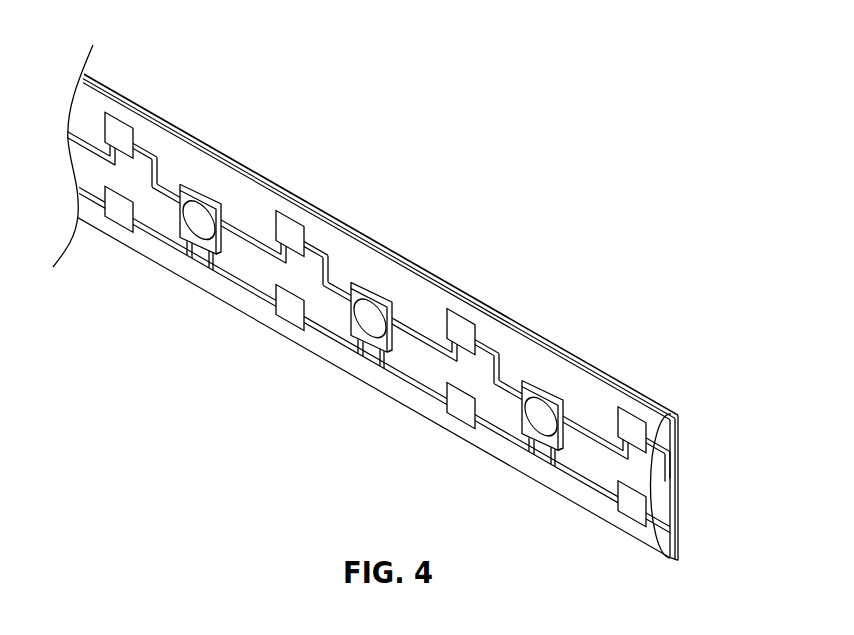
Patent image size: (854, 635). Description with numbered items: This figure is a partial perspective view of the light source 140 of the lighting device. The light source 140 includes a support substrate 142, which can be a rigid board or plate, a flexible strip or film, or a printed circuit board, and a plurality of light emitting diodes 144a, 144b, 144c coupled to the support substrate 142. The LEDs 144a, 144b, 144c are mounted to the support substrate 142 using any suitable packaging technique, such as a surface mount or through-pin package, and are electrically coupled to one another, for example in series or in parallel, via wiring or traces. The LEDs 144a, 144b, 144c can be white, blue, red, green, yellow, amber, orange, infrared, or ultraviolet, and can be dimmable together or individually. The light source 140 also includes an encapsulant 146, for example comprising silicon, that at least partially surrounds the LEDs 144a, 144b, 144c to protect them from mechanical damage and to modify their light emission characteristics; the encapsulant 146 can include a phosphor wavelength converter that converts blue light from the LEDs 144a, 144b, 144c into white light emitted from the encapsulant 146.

The light source 140 is at (620, 132).
The support substrate 142 is at (627, 408).
The light emitting diode 144a is at (550, 392).
The light emitting diode 144b is at (378, 296).
The light emitting diode 144c is at (207, 199).
The encapsulant 146 is at (652, 533).